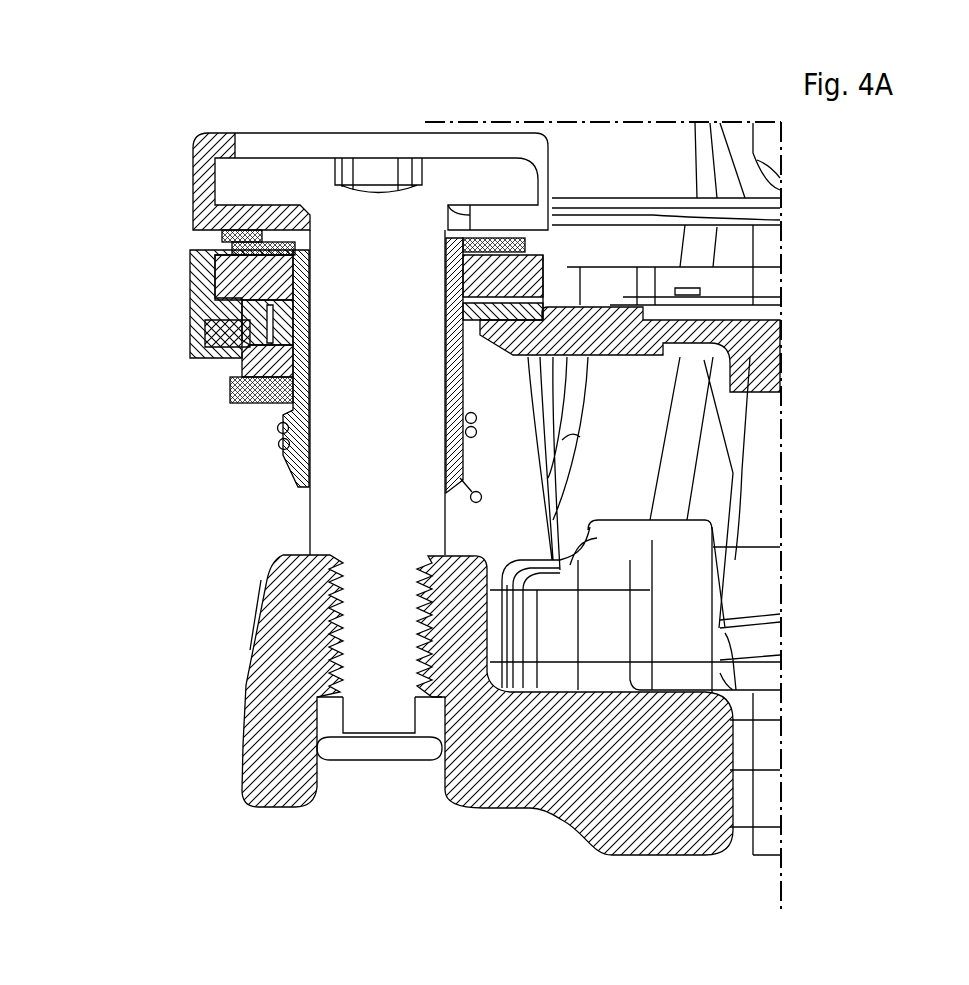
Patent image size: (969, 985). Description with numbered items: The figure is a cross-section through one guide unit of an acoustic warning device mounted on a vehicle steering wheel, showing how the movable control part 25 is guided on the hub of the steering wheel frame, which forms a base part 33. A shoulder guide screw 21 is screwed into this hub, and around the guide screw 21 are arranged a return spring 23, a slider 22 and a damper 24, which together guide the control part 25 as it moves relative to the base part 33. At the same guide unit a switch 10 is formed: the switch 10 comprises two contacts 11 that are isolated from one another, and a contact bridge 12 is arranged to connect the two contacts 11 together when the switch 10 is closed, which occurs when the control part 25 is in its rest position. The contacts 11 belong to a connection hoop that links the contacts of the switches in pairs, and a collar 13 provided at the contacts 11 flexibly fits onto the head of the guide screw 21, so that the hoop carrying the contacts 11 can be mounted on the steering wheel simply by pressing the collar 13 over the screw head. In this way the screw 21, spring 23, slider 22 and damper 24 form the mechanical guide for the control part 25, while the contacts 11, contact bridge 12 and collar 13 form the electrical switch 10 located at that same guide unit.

The switch 10 is at (86, 15).
The contact 11 is at (240, 232).
The contact bridge 12 is at (285, 245).
The collar 13 is at (193, 195).
The guide screw 21 is at (352, 497).
The slider 22 is at (291, 467).
The return spring 23 is at (278, 431).
The damper 24 is at (240, 371).
The control part 25 is at (190, 313).
The base part 33 is at (637, 833).